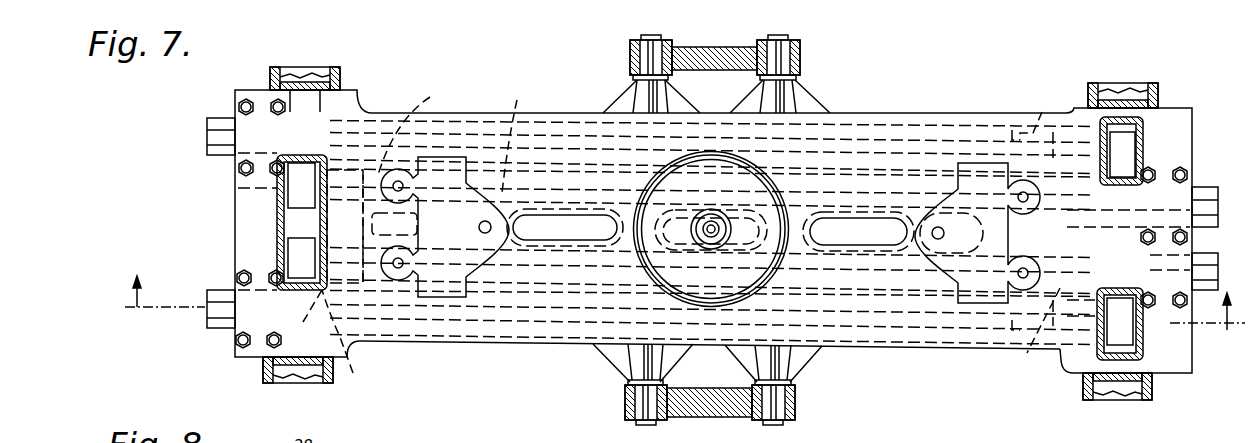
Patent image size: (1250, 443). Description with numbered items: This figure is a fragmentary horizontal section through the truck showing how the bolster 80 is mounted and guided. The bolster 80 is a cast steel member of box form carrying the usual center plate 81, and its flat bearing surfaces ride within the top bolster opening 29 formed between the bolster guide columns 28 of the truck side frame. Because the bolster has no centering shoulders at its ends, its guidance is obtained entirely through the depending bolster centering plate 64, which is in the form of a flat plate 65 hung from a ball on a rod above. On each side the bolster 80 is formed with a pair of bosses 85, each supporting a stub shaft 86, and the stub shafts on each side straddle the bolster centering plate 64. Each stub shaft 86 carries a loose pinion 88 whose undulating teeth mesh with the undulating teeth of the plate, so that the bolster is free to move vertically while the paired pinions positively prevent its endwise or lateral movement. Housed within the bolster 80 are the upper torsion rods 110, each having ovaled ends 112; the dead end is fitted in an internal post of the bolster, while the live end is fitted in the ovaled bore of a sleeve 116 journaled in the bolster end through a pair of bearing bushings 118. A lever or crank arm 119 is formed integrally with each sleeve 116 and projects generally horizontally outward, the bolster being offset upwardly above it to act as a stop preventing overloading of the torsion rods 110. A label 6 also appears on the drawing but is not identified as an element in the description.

The section line 6- 6 is at (685, 318).
The bolster guide columns 28 is at (300, 76).
The top bolster opening 29 is at (340, 92).
The bolster centering plate 64 is at (707, 48).
The flat plate 65 is at (733, 52).
The bolster 80 is at (897, 112).
The center plate 81 is at (787, 218).
The bosses 85 is at (772, 98).
The stub shaft 86 is at (648, 63).
The loose pinion 88 is at (640, 58).
The upper torsion rod 110 is at (513, 101).
The ends 112 is at (1043, 111).
The sleeve 116 is at (218, 117).
The bearing bushings 118 is at (681, 341).
The lever or crank arm 119 is at (300, 252).